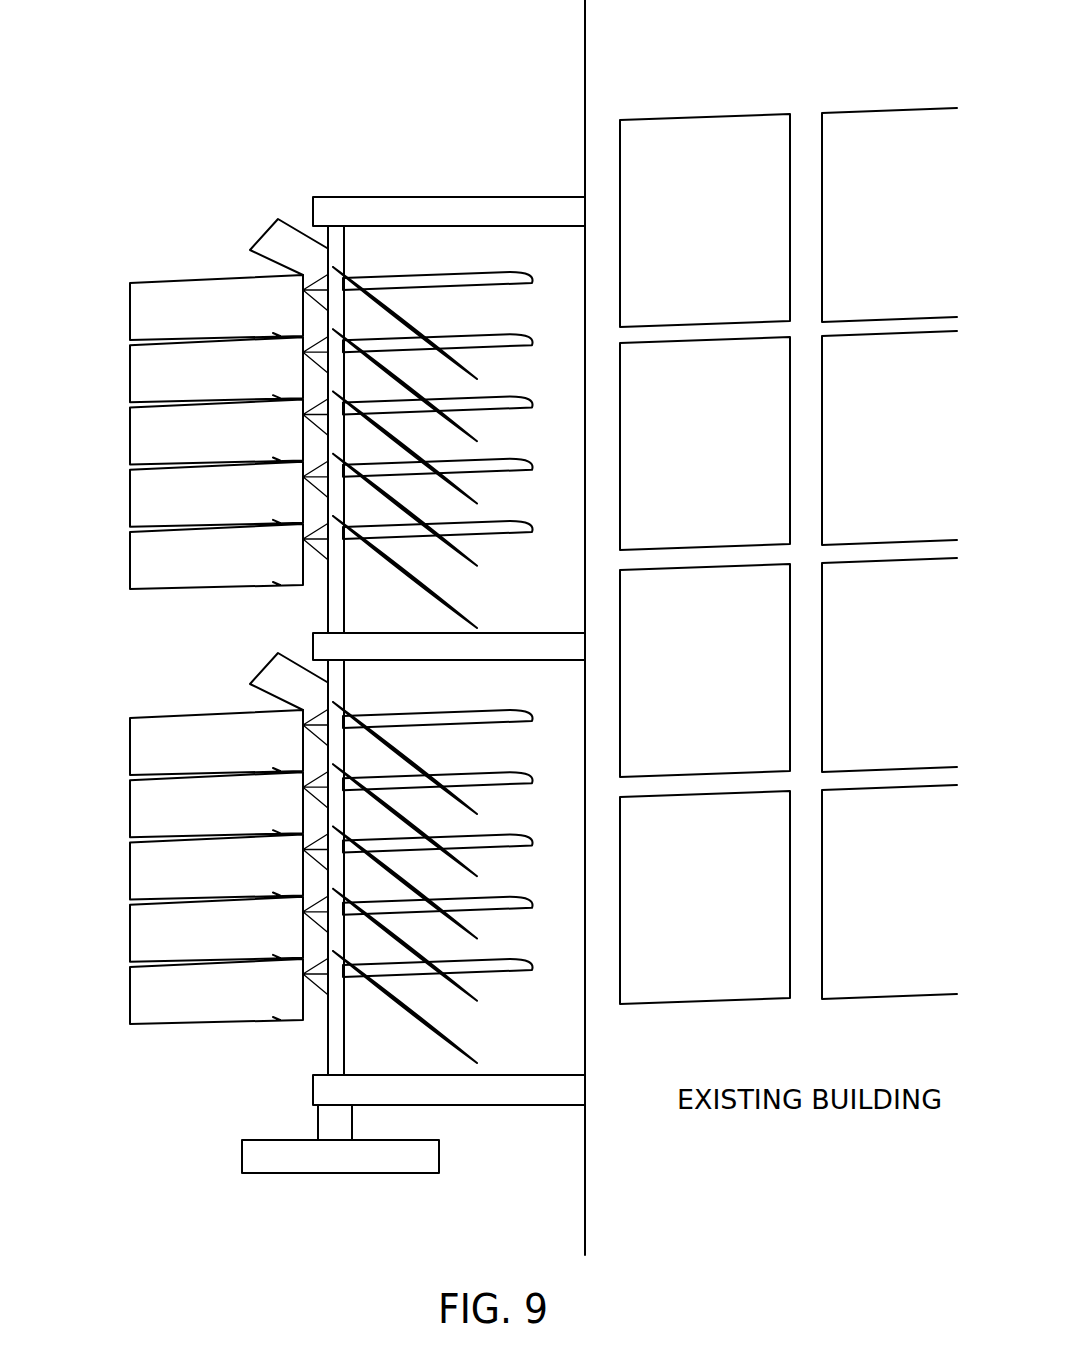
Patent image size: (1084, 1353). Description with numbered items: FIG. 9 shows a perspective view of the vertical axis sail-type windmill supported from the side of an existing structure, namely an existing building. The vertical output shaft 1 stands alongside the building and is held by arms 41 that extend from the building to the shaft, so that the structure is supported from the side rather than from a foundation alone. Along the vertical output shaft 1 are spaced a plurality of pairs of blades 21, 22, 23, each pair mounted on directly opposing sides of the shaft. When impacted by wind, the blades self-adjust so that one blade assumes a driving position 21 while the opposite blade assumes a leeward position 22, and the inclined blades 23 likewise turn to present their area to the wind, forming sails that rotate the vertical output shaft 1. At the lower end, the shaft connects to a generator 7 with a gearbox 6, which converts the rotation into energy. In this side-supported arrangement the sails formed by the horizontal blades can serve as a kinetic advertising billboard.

The vertical output shaft 1 is at (338, 258).
The gearbox 6 is at (320, 1125).
The generator 7 is at (240, 1165).
The blade in driving position 21 is at (140, 376).
The blade in leeward position 22 is at (478, 328).
The blade 23 is at (256, 240).
The arms 41 is at (343, 207).